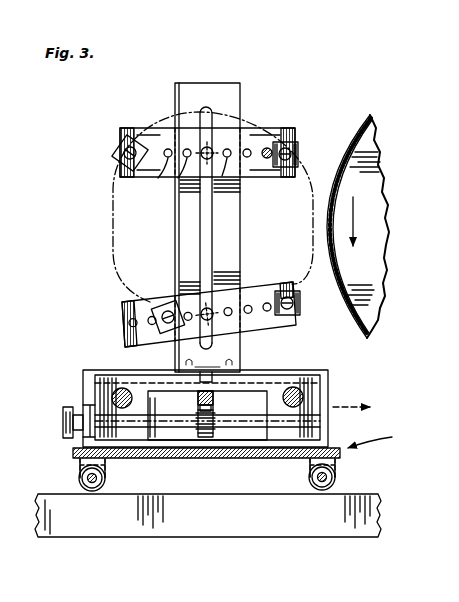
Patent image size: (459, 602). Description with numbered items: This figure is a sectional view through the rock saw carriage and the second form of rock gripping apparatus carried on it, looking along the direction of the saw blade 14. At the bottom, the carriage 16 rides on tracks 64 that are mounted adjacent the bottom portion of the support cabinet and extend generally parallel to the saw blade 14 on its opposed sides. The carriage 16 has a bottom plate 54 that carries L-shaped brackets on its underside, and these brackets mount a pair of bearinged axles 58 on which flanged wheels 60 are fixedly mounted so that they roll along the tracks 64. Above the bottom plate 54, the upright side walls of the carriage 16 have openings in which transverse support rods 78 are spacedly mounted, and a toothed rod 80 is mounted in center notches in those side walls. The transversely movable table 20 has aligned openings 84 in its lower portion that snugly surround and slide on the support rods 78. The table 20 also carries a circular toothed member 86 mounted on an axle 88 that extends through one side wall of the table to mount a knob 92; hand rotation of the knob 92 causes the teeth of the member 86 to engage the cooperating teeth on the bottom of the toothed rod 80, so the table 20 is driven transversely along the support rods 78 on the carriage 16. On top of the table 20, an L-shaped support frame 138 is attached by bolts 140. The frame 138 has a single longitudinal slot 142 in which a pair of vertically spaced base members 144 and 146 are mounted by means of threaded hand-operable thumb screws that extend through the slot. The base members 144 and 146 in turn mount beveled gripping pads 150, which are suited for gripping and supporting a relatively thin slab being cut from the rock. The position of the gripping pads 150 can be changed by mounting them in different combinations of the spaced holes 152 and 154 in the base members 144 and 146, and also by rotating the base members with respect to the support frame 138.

The saw blade 14 is at (375, 125).
The carriage 16 is at (370, 428).
The transversely movable table 20 is at (313, 428).
The bottom plate 54 is at (186, 459).
The bearinged axles 58 is at (106, 478).
The flanged wheels 60 is at (80, 474).
The tracks 64 is at (215, 537).
The transverse support rods 78 is at (114, 388).
The toothed rod 80 is at (213, 403).
The aligned openings 84 is at (290, 392).
The circular toothed member 86 is at (208, 435).
The axle 88 is at (207, 415).
The knob 92 is at (63, 410).
The support frame 138 is at (238, 212).
The bolts 140 is at (238, 355).
The longitudinal slot 142 is at (211, 127).
The base member 144 is at (263, 128).
The base member 146 is at (130, 309).
The beveled gripping pads 150 is at (118, 150).
The spaced holes 152 is at (213, 207).
The spaced holes 154 is at (250, 305).